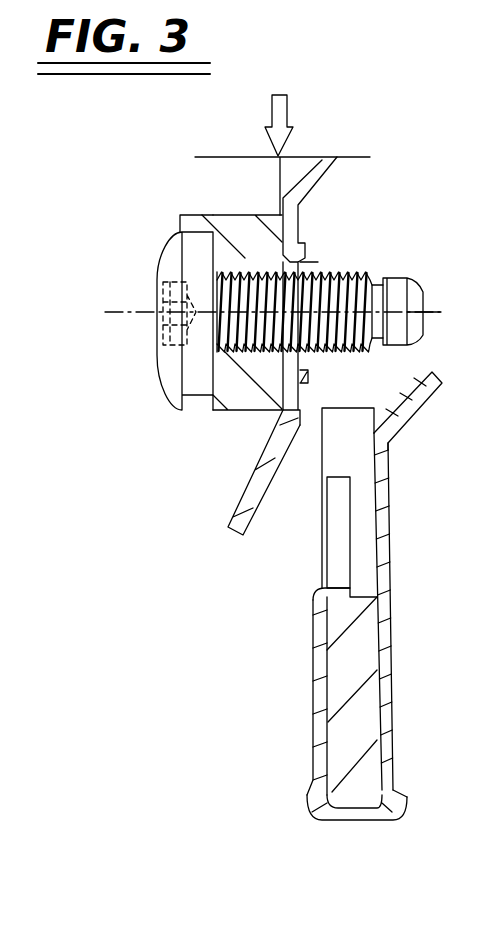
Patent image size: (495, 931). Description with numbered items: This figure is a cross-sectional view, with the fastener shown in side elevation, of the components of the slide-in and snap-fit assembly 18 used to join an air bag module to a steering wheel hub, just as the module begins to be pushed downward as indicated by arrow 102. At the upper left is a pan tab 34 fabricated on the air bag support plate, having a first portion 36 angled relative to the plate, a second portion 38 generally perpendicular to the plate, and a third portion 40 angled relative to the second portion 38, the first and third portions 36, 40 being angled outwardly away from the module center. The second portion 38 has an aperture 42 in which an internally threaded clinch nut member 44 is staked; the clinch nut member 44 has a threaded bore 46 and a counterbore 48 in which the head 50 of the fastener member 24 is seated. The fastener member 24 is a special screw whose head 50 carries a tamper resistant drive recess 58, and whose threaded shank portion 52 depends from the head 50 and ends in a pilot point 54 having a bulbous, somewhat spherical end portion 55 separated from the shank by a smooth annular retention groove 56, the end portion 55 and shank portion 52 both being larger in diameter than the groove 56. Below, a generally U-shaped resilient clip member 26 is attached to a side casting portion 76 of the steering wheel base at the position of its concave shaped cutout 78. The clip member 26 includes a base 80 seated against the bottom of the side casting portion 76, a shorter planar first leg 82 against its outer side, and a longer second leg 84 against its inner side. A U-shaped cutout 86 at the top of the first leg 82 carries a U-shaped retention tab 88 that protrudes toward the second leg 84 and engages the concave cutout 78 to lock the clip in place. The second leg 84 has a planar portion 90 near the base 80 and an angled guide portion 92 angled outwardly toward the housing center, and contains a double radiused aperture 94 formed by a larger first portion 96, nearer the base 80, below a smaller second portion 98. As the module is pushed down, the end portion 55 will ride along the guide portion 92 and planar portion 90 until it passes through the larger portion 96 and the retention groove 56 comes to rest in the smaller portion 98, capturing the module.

The connector assembly 18 is at (181, 557).
The fastener member 24 is at (284, 308).
The clip member 26 is at (365, 621).
The pan tab 34 is at (269, 346).
The first portion 36 is at (355, 162).
The second portion 38 is at (302, 216).
The third portion 40 is at (290, 447).
The aperture 42 is at (306, 380).
The clinch nut member 44 is at (231, 317).
The threaded bore 46 is at (273, 272).
The counterbore 48 is at (206, 226).
The head 50 is at (173, 246).
The threaded shank portion 52 is at (318, 282).
The pilot point 54 is at (417, 283).
The end portion 55 is at (418, 323).
The retention groove 56 is at (377, 284).
The tamper resistant drive recess 58 is at (160, 302).
The side casting portion 76 is at (365, 762).
The concave shaped cutout 78 is at (326, 602).
The base 80 is at (355, 821).
The first leg 82 is at (320, 702).
The second leg 84 is at (394, 746).
The U-shaped cutout 86 is at (333, 575).
The U-shaped retention tab 88 is at (326, 530).
The planar portion 90 is at (388, 702).
The angled guide portion 92 is at (420, 397).
The double radiused aperture 94 is at (374, 486).
The first portion 96 is at (386, 523).
The second portion 98 is at (384, 470).
The arrow 102 is at (280, 108).